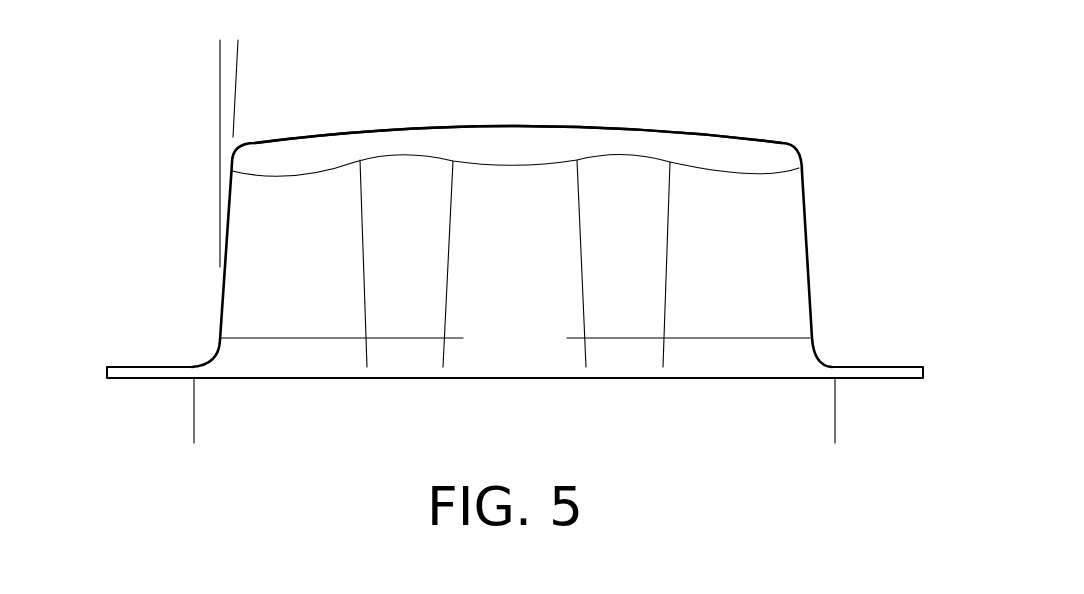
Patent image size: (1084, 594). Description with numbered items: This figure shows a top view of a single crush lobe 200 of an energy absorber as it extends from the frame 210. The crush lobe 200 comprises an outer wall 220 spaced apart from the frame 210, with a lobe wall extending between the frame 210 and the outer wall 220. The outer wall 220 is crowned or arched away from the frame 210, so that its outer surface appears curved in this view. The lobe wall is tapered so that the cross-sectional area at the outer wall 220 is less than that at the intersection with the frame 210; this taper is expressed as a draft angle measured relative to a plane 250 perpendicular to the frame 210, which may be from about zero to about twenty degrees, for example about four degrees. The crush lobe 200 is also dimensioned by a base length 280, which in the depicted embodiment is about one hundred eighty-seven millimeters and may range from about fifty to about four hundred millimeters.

The crush lobe 200 is at (832, 205).
The frame 210 is at (147, 366).
The outer wall 220 is at (672, 122).
The plane perpendicular to the frame 250 is at (220, 91).
The base length 280 is at (194, 424).